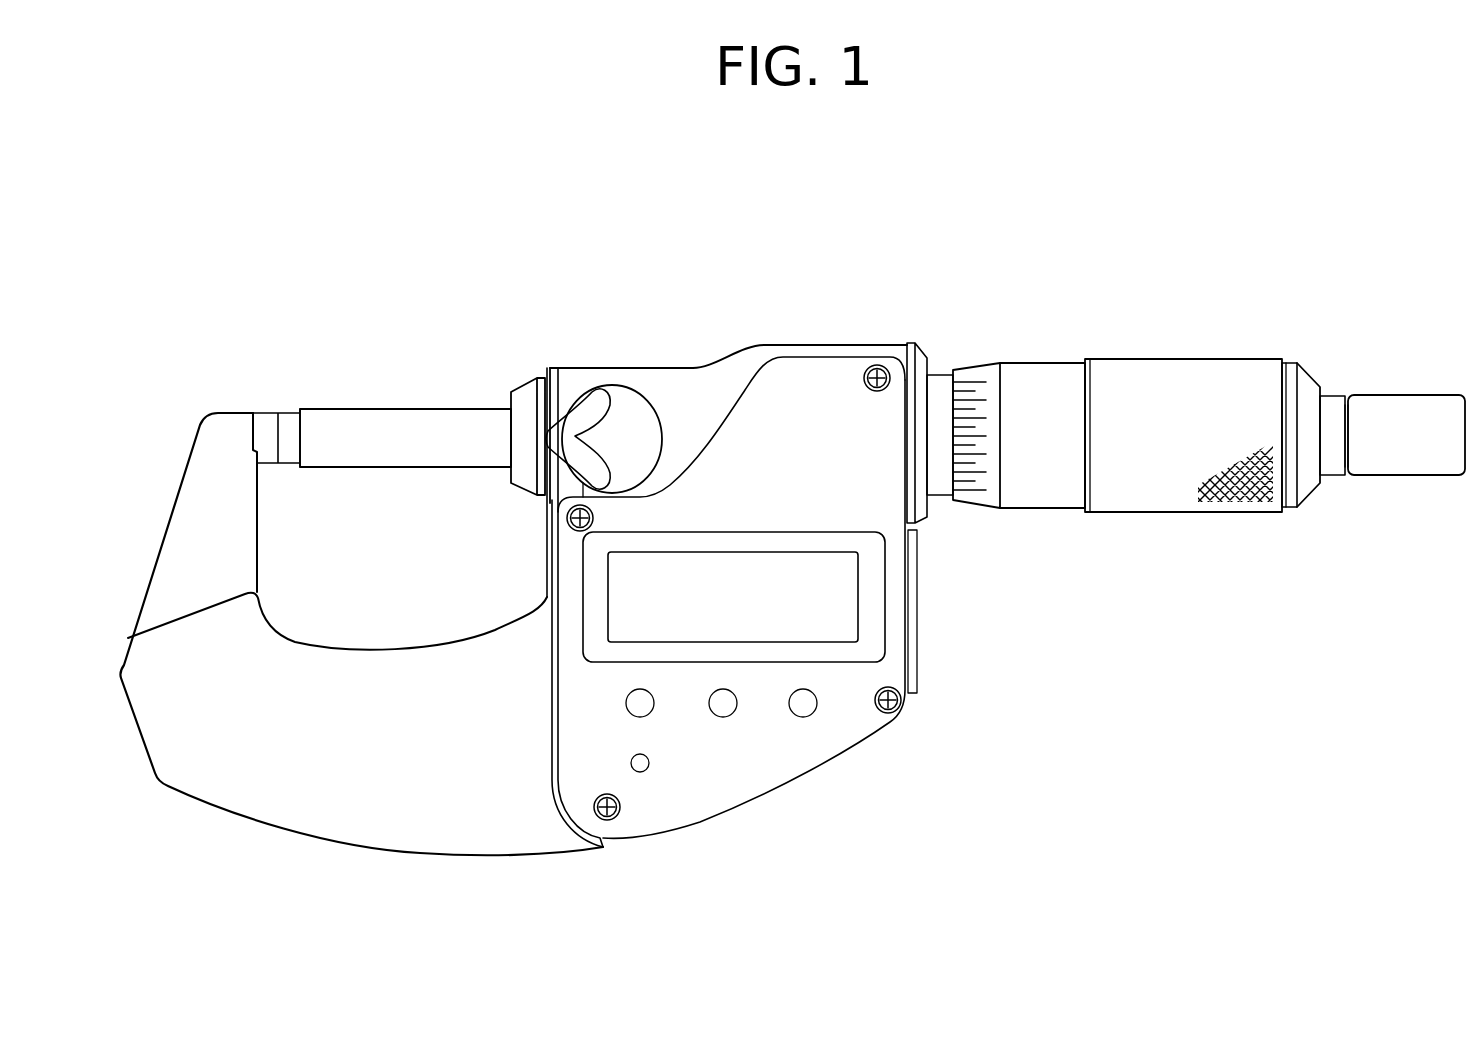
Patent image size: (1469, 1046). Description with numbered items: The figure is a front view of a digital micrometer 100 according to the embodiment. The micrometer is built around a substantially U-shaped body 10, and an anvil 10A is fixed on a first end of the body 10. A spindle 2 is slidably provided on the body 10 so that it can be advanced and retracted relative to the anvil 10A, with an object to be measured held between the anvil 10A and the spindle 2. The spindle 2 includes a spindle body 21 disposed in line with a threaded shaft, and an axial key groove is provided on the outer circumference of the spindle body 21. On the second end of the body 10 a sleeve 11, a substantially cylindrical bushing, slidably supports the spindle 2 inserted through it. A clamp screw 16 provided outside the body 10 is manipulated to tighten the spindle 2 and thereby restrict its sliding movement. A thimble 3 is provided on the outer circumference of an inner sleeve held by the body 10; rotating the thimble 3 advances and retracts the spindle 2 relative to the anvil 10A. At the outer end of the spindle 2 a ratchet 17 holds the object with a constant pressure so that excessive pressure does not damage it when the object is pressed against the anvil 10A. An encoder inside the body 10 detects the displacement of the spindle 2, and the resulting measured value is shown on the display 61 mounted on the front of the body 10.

The digital micrometer 100 is at (991, 258).
The body 10 is at (773, 345).
The anvil 10A is at (263, 410).
The spindle 2 is at (427, 410).
The spindle body 21 is at (375, 418).
The sleeve 11 is at (520, 378).
The clamp screw 16 is at (606, 388).
The thimble 3 is at (1052, 362).
The ratchet 17 is at (1388, 402).
The display 61 is at (847, 613).